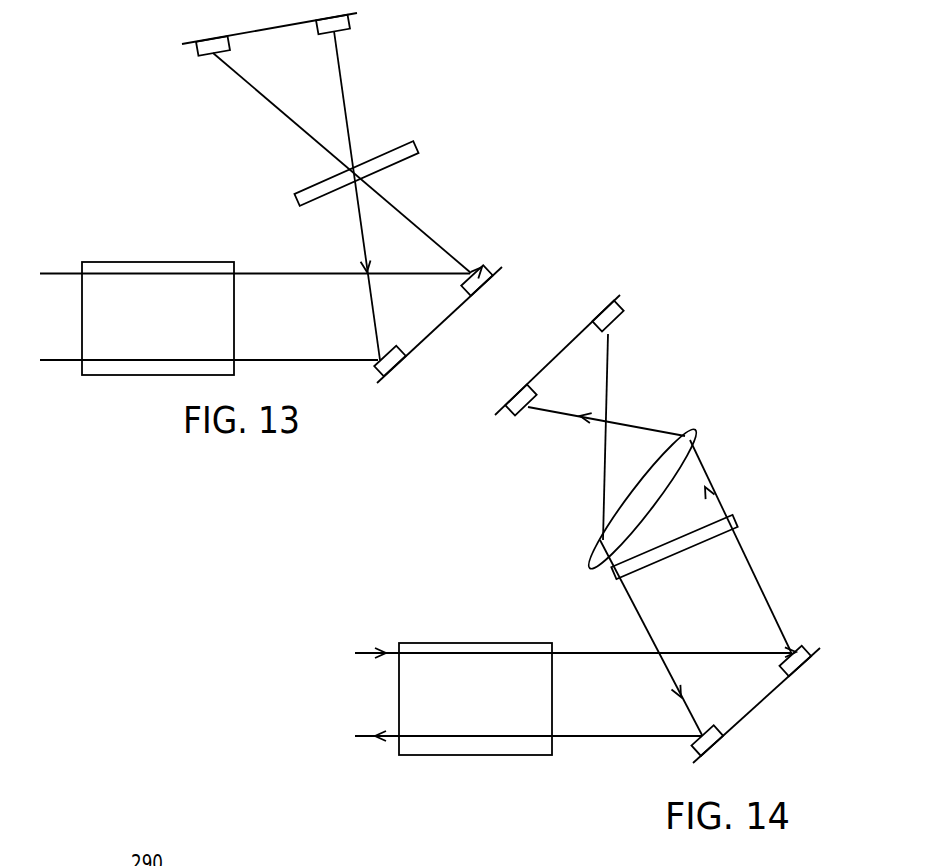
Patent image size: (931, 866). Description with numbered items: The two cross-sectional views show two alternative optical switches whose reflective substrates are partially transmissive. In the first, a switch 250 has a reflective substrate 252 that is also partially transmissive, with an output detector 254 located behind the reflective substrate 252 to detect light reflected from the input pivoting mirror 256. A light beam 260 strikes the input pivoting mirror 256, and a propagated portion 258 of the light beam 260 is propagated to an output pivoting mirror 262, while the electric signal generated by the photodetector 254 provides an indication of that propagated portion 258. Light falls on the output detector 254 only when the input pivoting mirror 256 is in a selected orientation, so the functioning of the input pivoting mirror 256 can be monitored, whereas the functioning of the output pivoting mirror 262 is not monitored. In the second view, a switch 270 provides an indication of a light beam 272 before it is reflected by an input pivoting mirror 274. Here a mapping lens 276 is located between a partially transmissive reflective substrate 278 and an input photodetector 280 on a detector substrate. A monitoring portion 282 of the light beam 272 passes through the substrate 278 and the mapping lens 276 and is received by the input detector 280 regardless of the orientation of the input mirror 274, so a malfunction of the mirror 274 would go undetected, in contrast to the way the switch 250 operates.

In FIG. 13, the switch 250 is at (108, 189).
In FIG. 13, the reflective substrate 252 is at (400, 153).
In FIG. 13, the output detector 254 is at (204, 54).
In FIG. 13, the input pivoting mirror 256 is at (485, 264).
In FIG. 13, the propagated portion 258 is at (358, 236).
In FIG. 13, the light beam 260 is at (421, 226).
In FIG. 13, the output pivoting mirror 262 is at (398, 347).
In FIG. 14, the switch 270 is at (697, 348).
In FIG. 14, the light beam 272 is at (708, 652).
In FIG. 14, the input pivoting mirror 274 is at (798, 648).
In FIG. 14, the mapping lens 276 is at (731, 420).
In FIG. 14, the partially transmissive reflective substrate 278 is at (740, 517).
In FIG. 14, the input photodetector 280 is at (518, 417).
In FIG. 14, the monitoring portion 282 is at (740, 546).